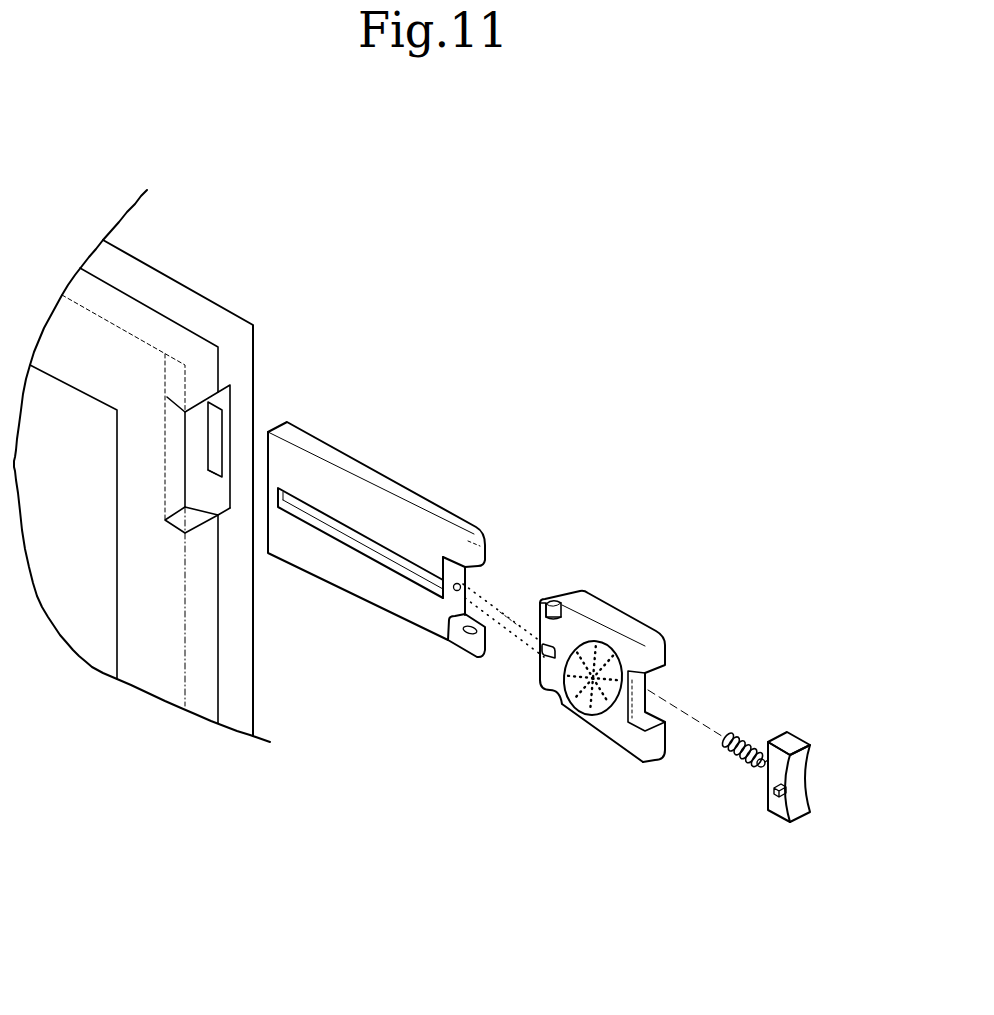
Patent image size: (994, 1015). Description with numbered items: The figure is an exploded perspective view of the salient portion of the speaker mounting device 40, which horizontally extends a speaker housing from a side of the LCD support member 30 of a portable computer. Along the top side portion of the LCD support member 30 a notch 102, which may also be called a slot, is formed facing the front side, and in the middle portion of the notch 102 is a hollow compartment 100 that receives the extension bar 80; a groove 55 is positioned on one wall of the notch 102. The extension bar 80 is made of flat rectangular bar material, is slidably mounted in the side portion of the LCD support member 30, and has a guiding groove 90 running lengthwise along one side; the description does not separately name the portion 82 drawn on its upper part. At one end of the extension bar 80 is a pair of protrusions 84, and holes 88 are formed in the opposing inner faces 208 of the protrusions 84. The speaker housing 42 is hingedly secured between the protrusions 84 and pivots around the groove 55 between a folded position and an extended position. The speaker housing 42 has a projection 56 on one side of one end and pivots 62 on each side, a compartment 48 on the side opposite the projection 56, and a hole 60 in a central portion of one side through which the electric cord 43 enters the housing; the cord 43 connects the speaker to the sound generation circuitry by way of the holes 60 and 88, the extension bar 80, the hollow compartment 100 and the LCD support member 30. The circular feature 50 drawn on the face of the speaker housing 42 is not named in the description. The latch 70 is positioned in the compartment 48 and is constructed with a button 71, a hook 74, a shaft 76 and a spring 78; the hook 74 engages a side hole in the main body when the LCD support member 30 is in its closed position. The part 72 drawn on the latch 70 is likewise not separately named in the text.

The LCD support member 30 is at (216, 312).
The groove 55 is at (218, 423).
The hollow compartment 100 is at (193, 490).
The notch 102 is at (183, 525).
The extension bar 80 is at (376, 543).
The upper beam 82 is at (408, 502).
The guiding groove 90 is at (388, 562).
The holes 88 is at (457, 593).
The protrusions 84 is at (463, 655).
The opposing inner faces 208 is at (481, 568).
The electric cord 43 is at (498, 607).
The speaker mounting device 40 is at (613, 649).
The speaker housing 42 is at (597, 730).
The projection 56 is at (545, 598).
The pivots 62 is at (560, 598).
The hole 60 is at (540, 655).
The hole 50 is at (640, 735).
The compartment 48 is at (642, 698).
The spring 78 is at (740, 737).
The latch 70 is at (785, 735).
The top face 72 is at (800, 743).
The button 71 is at (800, 785).
The hook 74 is at (778, 793).
The shaft 76 is at (758, 767).